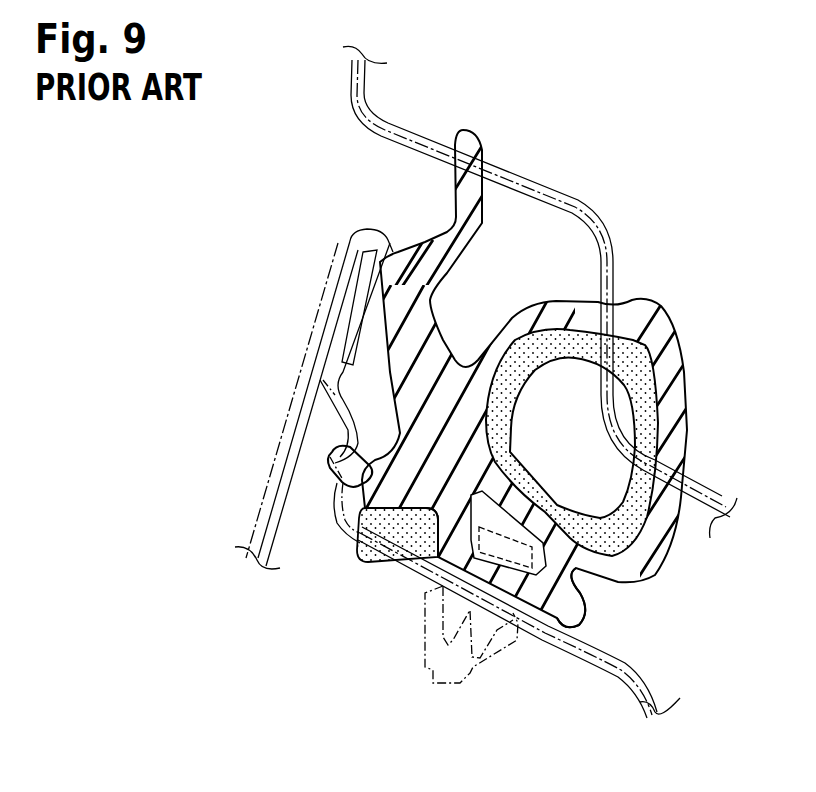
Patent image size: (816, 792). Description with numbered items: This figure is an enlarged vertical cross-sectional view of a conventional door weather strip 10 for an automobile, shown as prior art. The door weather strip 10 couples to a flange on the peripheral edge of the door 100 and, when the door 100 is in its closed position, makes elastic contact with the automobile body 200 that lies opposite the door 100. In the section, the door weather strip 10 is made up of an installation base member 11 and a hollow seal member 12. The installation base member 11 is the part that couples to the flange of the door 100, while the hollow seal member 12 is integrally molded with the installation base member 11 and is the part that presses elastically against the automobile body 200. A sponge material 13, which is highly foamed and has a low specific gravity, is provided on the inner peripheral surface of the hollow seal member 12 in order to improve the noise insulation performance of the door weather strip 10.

The door weather strip 10 is at (362, 613).
The installation base member 11 is at (568, 605).
The hollow seal member 12 is at (673, 397).
The sponge material 13 is at (637, 508).
The door 100 is at (300, 407).
The automobile body 200 is at (527, 182).